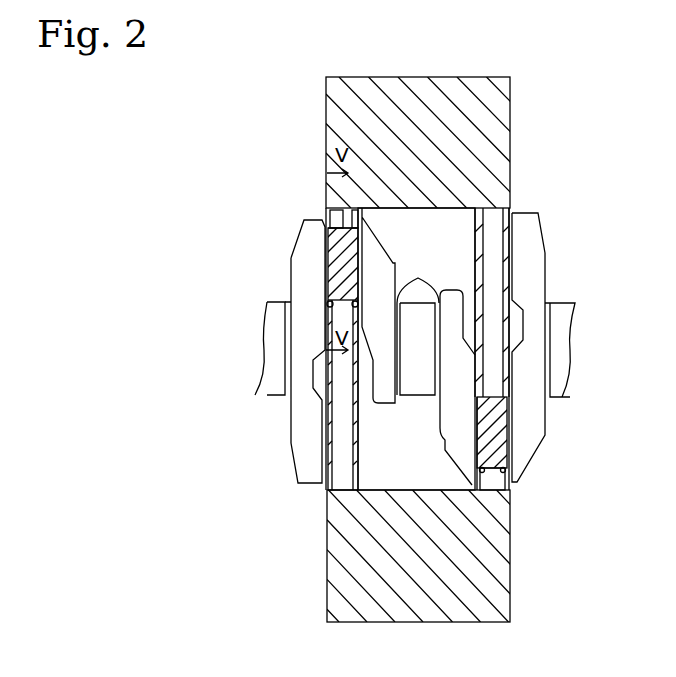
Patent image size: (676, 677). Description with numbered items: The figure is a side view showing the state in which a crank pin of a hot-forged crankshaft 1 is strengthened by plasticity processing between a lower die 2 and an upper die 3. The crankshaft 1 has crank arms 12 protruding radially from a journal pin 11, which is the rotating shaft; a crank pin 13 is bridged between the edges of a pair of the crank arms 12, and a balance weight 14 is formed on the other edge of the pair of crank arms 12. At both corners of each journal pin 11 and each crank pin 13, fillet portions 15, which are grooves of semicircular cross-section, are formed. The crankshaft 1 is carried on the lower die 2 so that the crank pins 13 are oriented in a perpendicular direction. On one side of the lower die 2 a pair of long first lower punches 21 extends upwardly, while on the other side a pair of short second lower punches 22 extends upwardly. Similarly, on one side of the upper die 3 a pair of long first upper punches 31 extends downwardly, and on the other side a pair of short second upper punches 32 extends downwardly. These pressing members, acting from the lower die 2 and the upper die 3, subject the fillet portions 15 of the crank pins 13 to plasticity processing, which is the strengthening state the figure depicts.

The crankshaft 1 is at (569, 224).
The lower die 2 is at (513, 560).
The upper die 3 is at (511, 120).
The journal pin 11 is at (420, 387).
The crank arm 12 is at (300, 265).
The crank pin 13 is at (336, 258).
The balance weight 14 is at (305, 447).
The fillet portion 15 is at (330, 222).
The first lower punch 21 is at (330, 482).
The second lower punch 22 is at (510, 480).
The first upper punch 31 is at (475, 280).
The second upper punch 32 is at (340, 207).